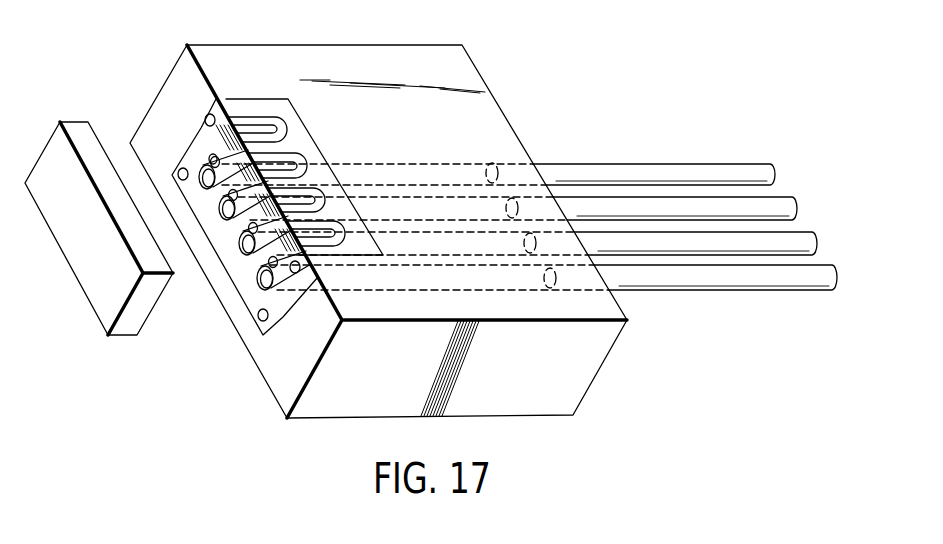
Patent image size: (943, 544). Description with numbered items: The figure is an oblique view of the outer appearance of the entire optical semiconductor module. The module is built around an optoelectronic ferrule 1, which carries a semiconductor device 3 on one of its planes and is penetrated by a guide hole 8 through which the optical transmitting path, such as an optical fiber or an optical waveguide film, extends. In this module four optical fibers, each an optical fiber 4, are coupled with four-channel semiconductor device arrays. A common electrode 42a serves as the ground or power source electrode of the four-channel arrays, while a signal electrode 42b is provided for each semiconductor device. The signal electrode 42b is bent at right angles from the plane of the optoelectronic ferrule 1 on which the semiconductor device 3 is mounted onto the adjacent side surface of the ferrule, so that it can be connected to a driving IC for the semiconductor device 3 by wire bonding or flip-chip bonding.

The optoelectronic ferrule 1 is at (368, 58).
The semiconductor device 3 is at (85, 277).
The optical fiber 4 is at (678, 276).
The guide hole 8 is at (262, 290).
The common electrode 42a is at (208, 117).
The signal electrode 42b is at (211, 157).